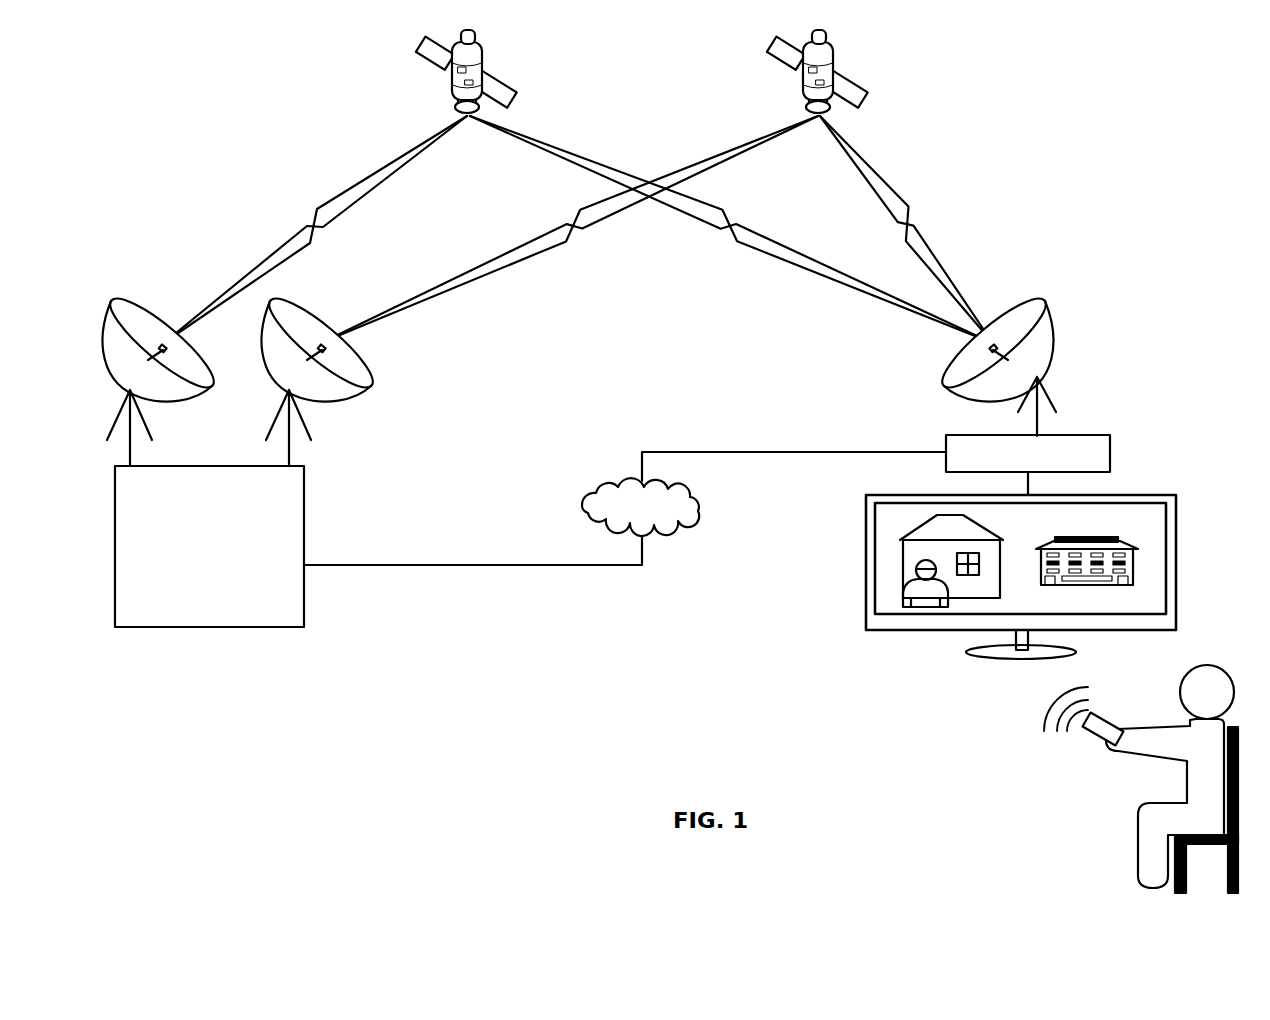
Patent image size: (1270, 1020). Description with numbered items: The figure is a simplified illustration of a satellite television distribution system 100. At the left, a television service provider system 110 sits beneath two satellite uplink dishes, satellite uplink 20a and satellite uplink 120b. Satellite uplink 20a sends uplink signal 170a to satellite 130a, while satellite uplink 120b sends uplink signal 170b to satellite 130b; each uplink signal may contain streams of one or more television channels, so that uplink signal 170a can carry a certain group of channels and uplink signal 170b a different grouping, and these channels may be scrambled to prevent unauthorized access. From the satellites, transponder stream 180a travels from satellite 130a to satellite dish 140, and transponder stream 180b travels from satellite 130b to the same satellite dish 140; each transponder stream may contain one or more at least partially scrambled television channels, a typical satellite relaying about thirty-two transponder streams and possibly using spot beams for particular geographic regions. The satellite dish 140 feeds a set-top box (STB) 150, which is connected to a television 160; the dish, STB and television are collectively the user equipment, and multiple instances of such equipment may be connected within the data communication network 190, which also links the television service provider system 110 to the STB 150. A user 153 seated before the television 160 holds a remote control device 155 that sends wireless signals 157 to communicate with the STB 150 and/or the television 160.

The satellite television distribution system 100 is at (176, 95).
The television service provider system 110 is at (298, 628).
The satellite uplink 20a is at (125, 307).
The satellite uplink 120b is at (293, 313).
The satellite 130a is at (514, 86).
The satellite 130b is at (866, 88).
The satellite dish 140 is at (1031, 308).
The set-top box (STB) 150 is at (1089, 436).
The user 153 is at (1213, 669).
The remote control device 155 is at (1090, 742).
The wireless signals 157 is at (1046, 730).
The television 160 is at (1145, 496).
The uplink signal 170a is at (431, 138).
The uplink signal 170b is at (716, 160).
The transponder stream 180a is at (626, 166).
The transponder stream 180b is at (902, 192).
The data communication network 190 is at (589, 494).